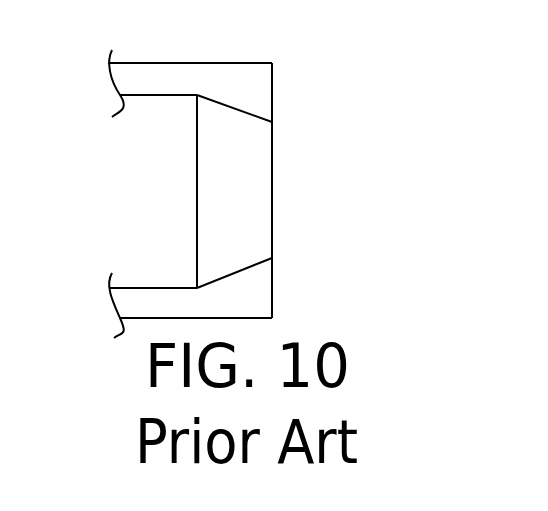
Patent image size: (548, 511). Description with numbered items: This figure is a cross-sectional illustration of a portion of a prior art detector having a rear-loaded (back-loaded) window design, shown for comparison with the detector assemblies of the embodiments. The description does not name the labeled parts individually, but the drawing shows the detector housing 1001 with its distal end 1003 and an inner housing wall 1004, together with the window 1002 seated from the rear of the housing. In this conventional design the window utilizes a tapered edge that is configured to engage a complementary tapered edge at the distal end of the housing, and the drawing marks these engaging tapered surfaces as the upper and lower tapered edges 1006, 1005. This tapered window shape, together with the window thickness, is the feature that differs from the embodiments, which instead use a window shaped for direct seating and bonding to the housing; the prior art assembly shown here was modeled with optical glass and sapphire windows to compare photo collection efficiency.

The bottom flange 1001 is at (255, 296).
The web 1002 is at (254, 190).
The outer face 1003 is at (272, 237).
The inner wall 1004 is at (197, 187).
The lower tapered portion 1005 is at (237, 275).
The upper tapered portion 1006 is at (230, 108).